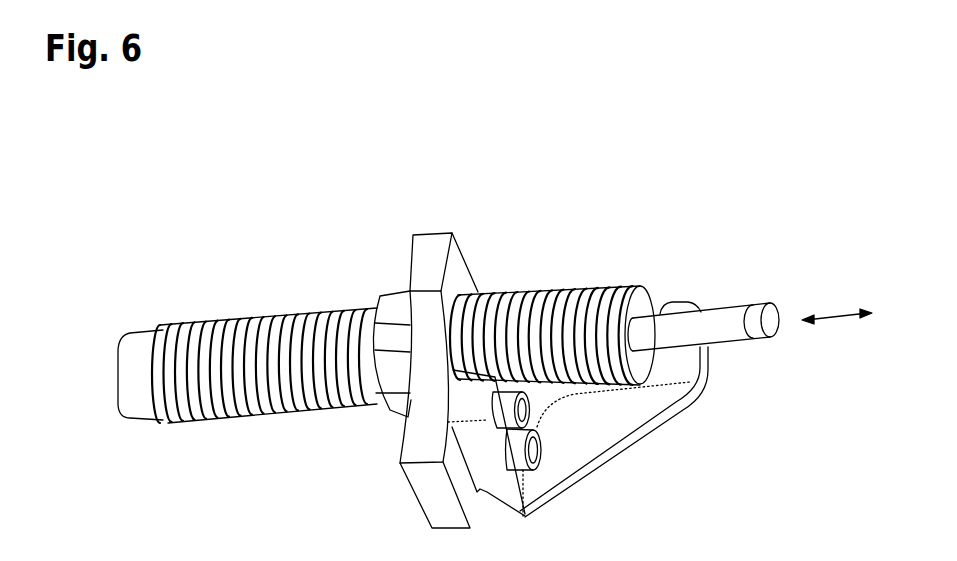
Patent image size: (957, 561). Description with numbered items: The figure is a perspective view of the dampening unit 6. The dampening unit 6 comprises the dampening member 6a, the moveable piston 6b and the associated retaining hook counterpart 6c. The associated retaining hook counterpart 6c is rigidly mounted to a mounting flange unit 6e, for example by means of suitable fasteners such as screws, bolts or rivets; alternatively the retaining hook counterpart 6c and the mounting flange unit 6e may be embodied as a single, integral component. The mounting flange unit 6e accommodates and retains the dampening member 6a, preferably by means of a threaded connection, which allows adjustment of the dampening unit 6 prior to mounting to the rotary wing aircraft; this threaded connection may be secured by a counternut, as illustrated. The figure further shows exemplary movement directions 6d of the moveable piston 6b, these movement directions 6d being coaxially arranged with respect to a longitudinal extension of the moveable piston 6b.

The dampening unit 6 is at (223, 284).
The dampening member 6a is at (573, 288).
The moveable piston 6b is at (735, 312).
The associated retaining hook counterpart 6c is at (677, 300).
The movement directions 6d is at (838, 318).
The mounting flange unit 6e is at (435, 232).